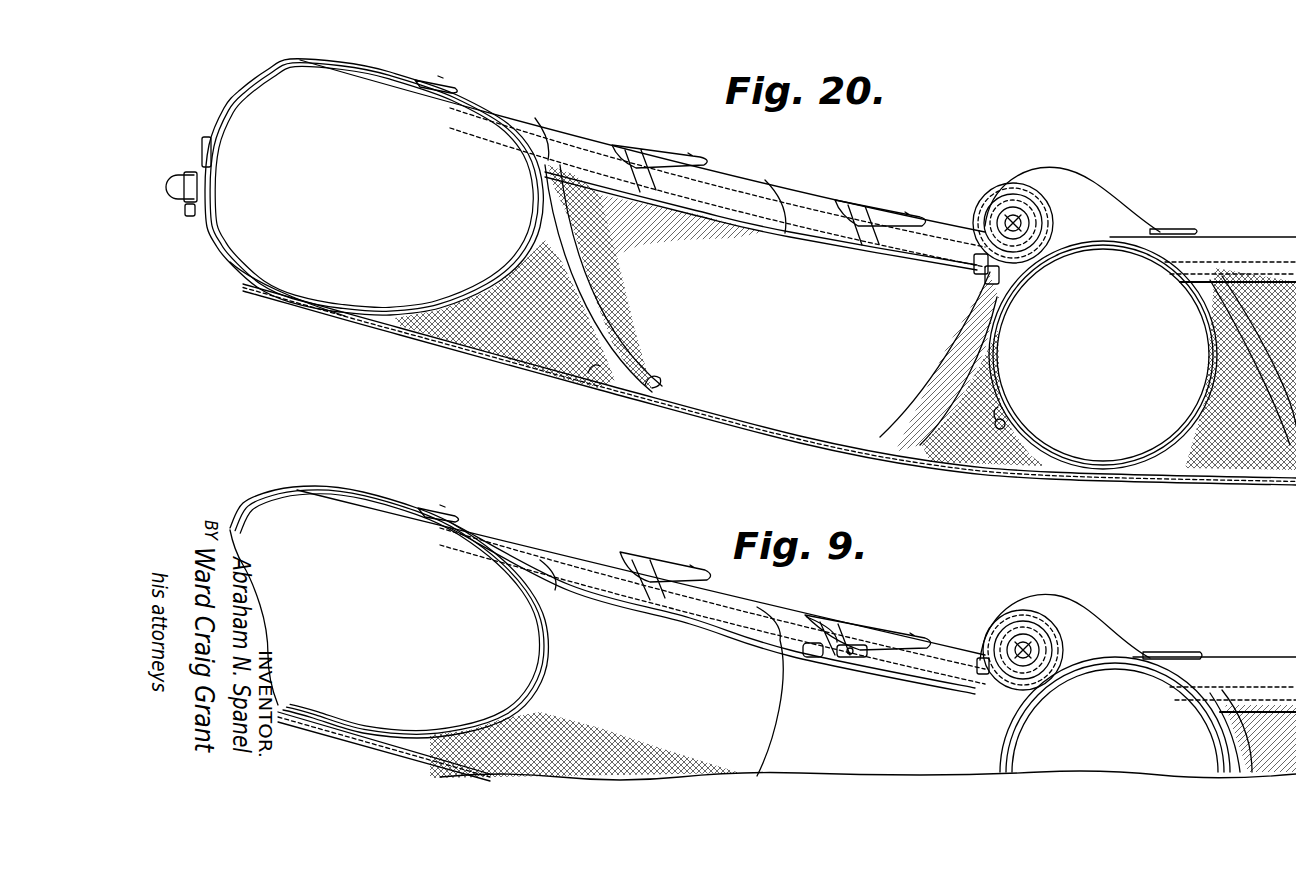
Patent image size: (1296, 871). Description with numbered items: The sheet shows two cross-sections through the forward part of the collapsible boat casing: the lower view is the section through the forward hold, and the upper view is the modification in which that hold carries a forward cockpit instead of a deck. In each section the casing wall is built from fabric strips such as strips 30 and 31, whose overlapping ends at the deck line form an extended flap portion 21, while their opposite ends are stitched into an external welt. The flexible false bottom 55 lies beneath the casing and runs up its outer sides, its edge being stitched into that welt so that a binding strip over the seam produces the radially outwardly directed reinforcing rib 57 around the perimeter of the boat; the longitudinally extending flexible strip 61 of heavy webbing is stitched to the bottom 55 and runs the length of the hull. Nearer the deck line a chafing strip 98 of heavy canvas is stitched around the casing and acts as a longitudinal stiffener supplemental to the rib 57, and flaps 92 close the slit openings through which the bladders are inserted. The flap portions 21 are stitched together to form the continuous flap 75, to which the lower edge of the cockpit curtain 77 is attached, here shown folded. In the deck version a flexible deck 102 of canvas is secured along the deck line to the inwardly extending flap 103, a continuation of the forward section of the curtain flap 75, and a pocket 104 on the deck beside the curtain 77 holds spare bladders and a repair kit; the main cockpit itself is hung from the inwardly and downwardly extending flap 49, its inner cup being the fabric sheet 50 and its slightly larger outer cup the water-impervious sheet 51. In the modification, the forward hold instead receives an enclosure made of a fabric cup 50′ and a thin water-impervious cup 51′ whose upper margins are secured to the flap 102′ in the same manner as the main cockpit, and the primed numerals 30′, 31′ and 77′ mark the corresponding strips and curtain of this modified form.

In FIG. 20, the wheel (modified form) 30′ is at (278, 60).
In FIG. 9, the strip 30 is at (292, 489).
In FIG. 20, the rim band (modified) 31′ is at (221, 255).
In FIG. 9, the strip 31 is at (378, 750).
In FIG. 20, the longitudinally extending flexible strip 61 is at (242, 281).
In FIG. 9, the longitudinally extending flexible strip 61 is at (305, 720).
In FIG. 20, the flexible false bottom 55 is at (276, 300).
In FIG. 9, the flexible false bottom 55 is at (424, 762).
In FIG. 20, the chafing strip 98 is at (204, 146).
In FIG. 20, the reinforcing rib 57 is at (186, 220).
In FIG. 20, the flaps 92 is at (384, 77).
In FIG. 9, the flaps 92 is at (430, 508).
In FIG. 20, the flap 102′ is at (820, 240).
In FIG. 9, the flexible deck 102 is at (749, 640).
In FIG. 9, the inwardly extending flap 103 is at (745, 633).
In FIG. 9, the pocket 104 is at (897, 687).
In FIG. 20, the roller (modified) 77′ is at (1033, 181).
In FIG. 9, the cockpit curtain 77 is at (1009, 612).
In FIG. 20, the continuous flap 75 is at (975, 266).
In FIG. 20, the extended flap portion 21 is at (990, 280).
In FIG. 9, the extended flap portion 21 is at (983, 660).
In FIG. 20, the fabric cup 50′ is at (655, 389).
In FIG. 20, the canvas sheet 50 is at (1228, 351).
In FIG. 9, the canvas sheet 50 is at (1218, 739).
In FIG. 20, the water-impervious cup 51′ is at (583, 386).
In FIG. 20, the water-impervious sheet 51 is at (1254, 366).
In FIG. 9, the water-impervious sheet 51 is at (1238, 758).
In FIG. 9, the inwardly and downwardly extending flap 49 is at (1256, 695).